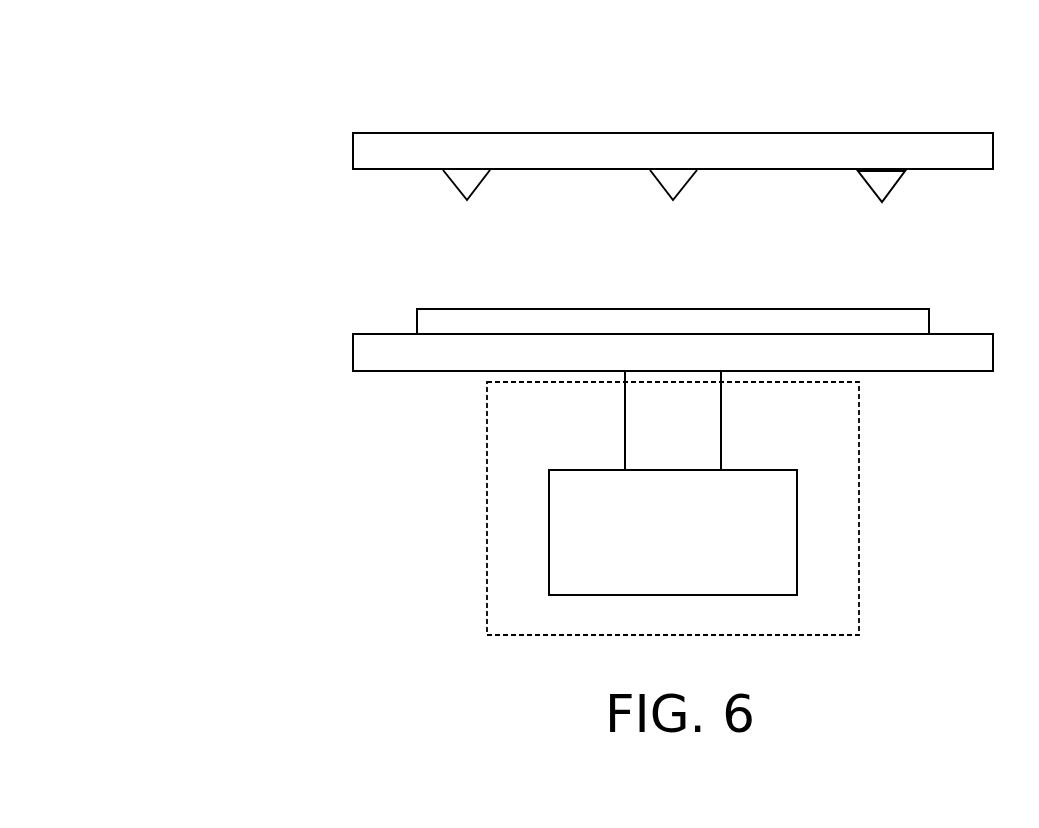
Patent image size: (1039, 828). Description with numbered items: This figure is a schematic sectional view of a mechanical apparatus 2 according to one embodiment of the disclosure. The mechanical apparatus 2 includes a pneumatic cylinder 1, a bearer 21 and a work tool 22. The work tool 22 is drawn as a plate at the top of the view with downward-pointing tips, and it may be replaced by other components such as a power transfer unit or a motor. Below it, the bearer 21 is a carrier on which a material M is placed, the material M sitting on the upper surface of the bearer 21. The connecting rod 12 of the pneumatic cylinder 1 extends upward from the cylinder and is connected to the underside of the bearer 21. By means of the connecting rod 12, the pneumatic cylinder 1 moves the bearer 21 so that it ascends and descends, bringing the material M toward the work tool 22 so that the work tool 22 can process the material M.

The mechanical apparatus 2 is at (146, 44).
The work tool 22 is at (665, 150).
The material M is at (674, 322).
The bearer 21 is at (362, 352).
The connecting rod 12 is at (691, 446).
The pneumatic cylinder 1 is at (487, 509).